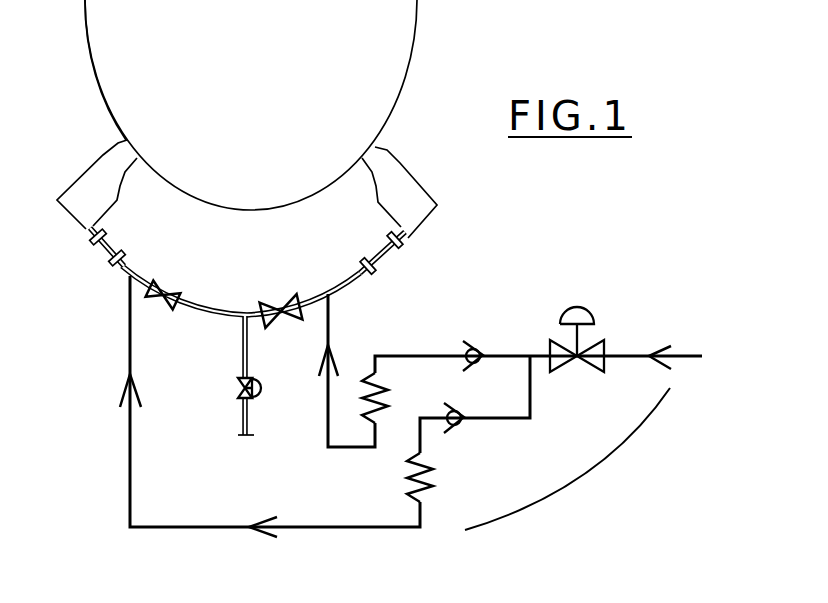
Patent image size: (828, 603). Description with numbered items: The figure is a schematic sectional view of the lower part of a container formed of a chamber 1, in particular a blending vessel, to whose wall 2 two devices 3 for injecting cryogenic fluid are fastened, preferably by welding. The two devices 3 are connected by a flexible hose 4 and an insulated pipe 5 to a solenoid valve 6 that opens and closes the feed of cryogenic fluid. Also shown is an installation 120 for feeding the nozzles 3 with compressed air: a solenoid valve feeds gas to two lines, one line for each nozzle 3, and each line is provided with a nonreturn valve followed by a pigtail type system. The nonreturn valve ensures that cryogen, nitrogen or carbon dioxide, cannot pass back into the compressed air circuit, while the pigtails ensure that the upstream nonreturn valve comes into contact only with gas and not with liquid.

The chamber 1 is at (118, 43).
The wall 2 is at (95, 78).
The device for injecting cryogenic fluid 3 is at (77, 173).
The flexible hose 4 is at (107, 255).
The insulated pipe 5 is at (198, 315).
The solenoid valve 6 is at (240, 384).
The installation for feeding the nozzles with compressed air 120 is at (567, 459).